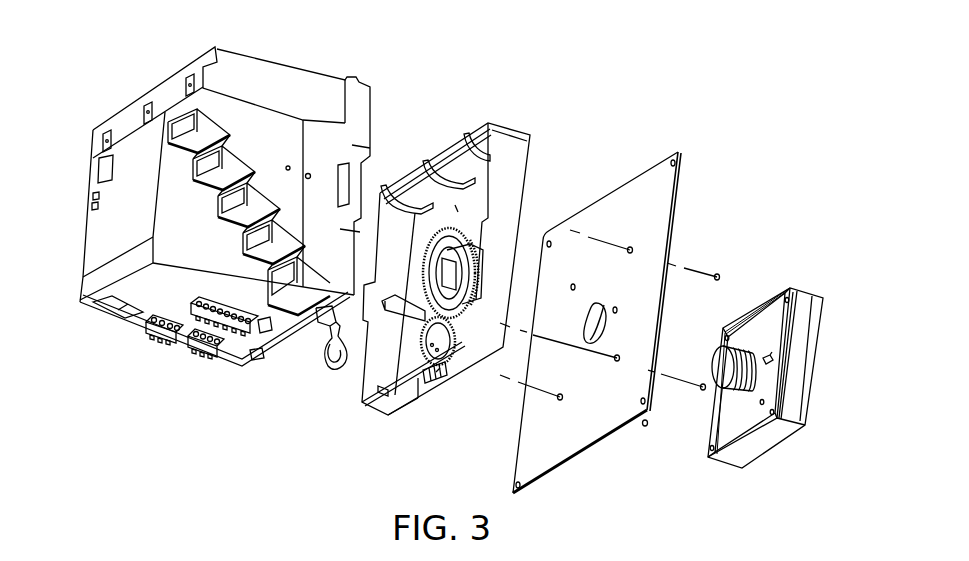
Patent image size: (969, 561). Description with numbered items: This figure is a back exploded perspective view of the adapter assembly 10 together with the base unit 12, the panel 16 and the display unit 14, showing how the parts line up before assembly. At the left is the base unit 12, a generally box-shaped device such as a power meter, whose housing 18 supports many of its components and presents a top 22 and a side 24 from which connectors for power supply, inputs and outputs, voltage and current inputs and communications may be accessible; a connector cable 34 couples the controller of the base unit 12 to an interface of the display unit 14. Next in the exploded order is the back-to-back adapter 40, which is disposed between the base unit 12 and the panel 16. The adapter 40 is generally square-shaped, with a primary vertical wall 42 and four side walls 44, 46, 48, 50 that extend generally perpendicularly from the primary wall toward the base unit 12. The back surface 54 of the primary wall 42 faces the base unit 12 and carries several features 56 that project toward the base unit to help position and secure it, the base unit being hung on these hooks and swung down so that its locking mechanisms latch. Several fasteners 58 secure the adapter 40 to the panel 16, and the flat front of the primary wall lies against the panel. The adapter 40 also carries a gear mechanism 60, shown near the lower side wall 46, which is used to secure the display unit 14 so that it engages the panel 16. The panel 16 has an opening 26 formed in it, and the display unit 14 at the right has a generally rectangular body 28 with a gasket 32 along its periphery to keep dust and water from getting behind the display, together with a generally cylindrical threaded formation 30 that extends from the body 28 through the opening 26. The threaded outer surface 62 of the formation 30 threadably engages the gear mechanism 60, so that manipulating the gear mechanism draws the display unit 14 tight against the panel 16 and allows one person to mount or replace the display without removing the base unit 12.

The adapter assembly 10 is at (612, 130).
The base unit 12 is at (92, 313).
The display unit 14 is at (815, 292).
The panel 16 is at (580, 428).
The housing 18 is at (108, 119).
The top 22 is at (92, 210).
The side 24 is at (248, 124).
The opening 26 is at (598, 322).
The body 28 is at (792, 424).
The cylindrical-shaped threaded formation 30 is at (739, 390).
The gasket 32 is at (758, 298).
The connector cable 34 is at (330, 348).
The back-to-back adapter 40 is at (515, 129).
The primary wall 42 is at (407, 362).
The side wall 44 is at (461, 157).
The side wall 46 is at (418, 398).
The side wall 48 is at (508, 166).
The side wall 50 is at (377, 375).
The back surface 54 is at (465, 213).
The features 56 is at (418, 209).
The fasteners 58 is at (665, 318).
The gear mechanism 60 is at (443, 378).
The threaded outer surface 62 is at (772, 361).